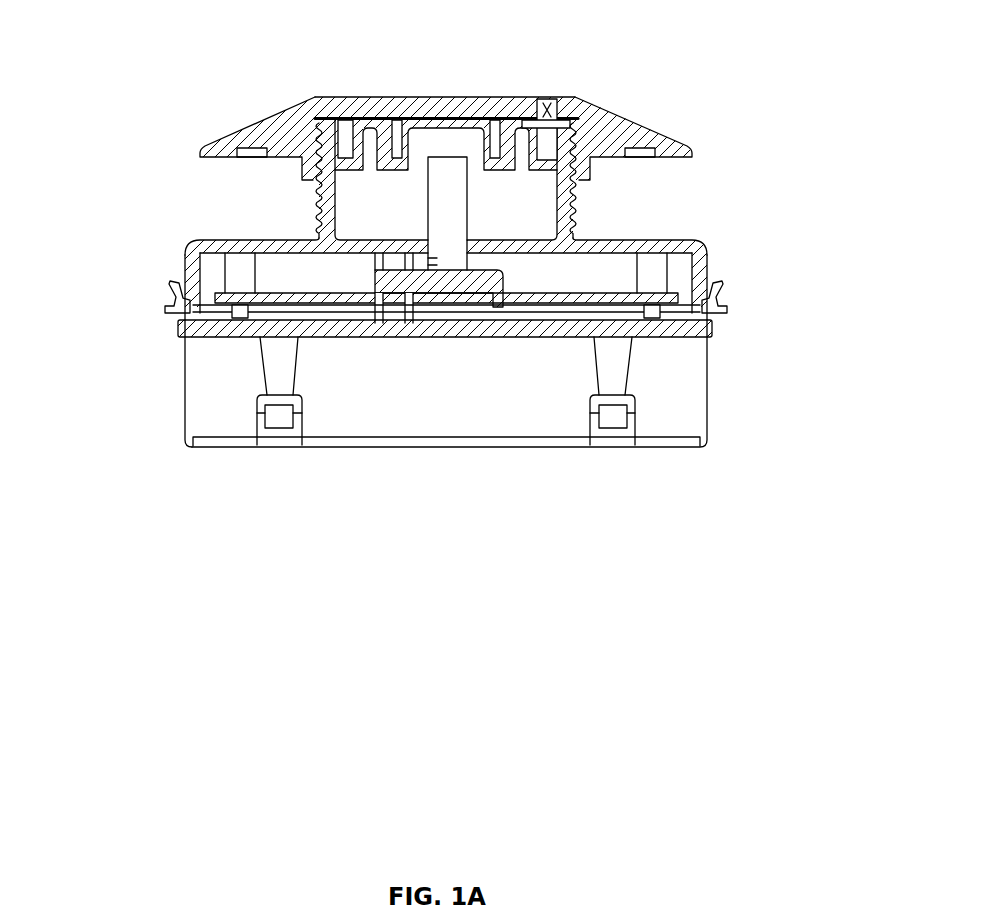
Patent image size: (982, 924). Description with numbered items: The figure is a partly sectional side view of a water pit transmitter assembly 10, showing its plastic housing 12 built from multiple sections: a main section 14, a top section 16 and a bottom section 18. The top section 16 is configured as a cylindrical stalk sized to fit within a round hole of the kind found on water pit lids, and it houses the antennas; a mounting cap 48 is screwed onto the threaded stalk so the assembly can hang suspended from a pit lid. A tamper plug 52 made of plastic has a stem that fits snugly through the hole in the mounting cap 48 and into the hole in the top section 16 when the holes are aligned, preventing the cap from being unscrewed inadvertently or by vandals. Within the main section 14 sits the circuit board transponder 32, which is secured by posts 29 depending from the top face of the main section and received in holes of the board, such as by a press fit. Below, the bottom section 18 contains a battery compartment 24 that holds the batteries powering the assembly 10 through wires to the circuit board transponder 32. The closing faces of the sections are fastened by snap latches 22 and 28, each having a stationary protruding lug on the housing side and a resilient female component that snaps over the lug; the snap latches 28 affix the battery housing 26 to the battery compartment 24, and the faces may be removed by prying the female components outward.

The water pit transmitter assembly 10 is at (172, 106).
The mounting cap 48 is at (345, 87).
The tamper plug 52 is at (550, 103).
The top section 16 is at (452, 220).
The main section 14 is at (703, 250).
The housing 12 is at (713, 265).
The posts 29 is at (240, 270).
The snap latches 22 is at (170, 307).
The bottom section 18 is at (655, 355).
The circuit board transponder 32 is at (670, 300).
The battery housing 26 is at (182, 390).
The battery compartment 24 is at (223, 417).
The snap latches 28 is at (610, 437).